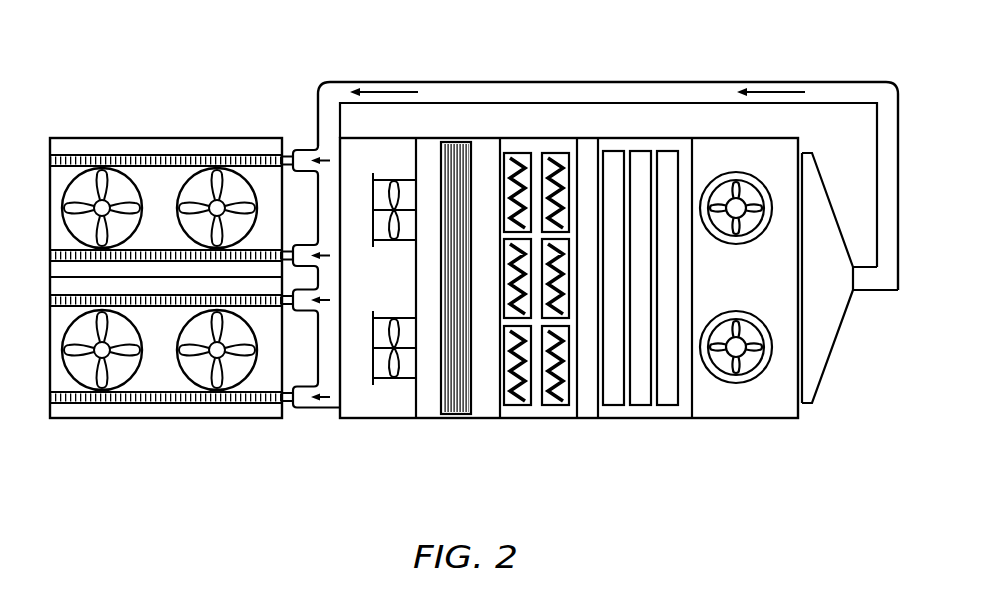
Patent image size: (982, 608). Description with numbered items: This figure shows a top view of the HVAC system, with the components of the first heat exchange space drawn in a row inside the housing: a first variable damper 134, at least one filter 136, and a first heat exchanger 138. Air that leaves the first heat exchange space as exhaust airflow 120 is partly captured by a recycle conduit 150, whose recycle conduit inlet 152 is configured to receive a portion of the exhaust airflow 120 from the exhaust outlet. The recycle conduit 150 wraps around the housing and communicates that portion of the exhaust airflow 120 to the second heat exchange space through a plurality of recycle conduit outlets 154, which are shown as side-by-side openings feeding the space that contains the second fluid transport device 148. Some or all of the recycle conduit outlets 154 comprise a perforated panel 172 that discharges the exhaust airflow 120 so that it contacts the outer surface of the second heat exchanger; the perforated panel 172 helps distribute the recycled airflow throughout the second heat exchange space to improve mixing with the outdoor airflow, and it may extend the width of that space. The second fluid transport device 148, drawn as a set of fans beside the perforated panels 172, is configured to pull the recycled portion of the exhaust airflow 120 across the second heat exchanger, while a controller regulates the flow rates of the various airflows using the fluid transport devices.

The exhaust airflow 120 is at (383, 92).
The first variable damper 134 is at (663, 393).
The filter 136 is at (520, 402).
The first heat exchanger 138 is at (452, 395).
The second fluid transport device 148 is at (214, 378).
The recycle conduit 150 is at (676, 82).
The recycle conduit inlet 152 is at (853, 290).
The recycle conduit outlet 154 is at (292, 250).
The perforated panel 172 is at (168, 255).